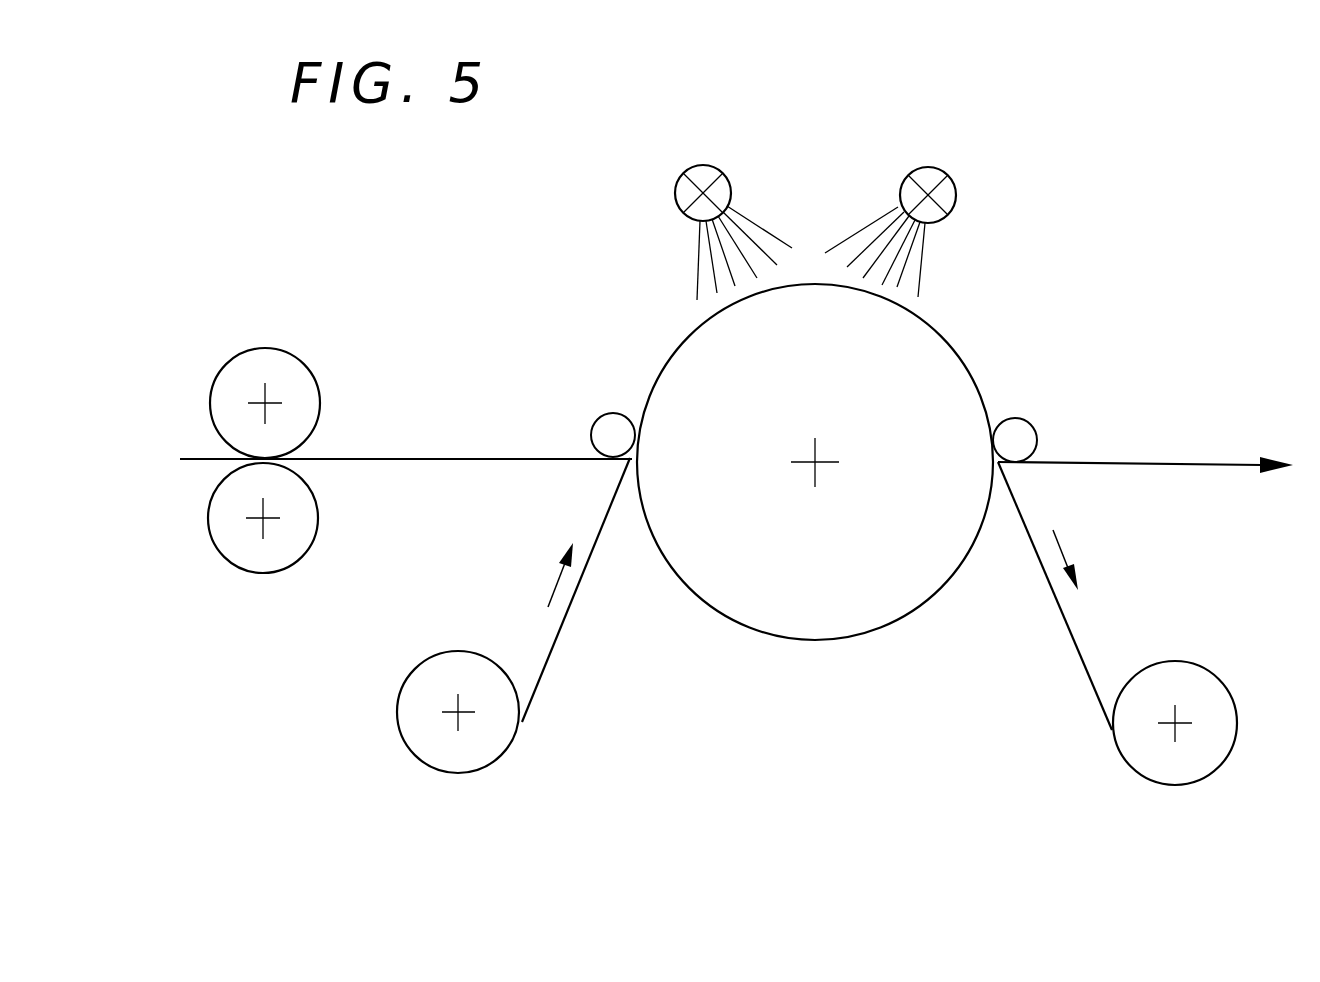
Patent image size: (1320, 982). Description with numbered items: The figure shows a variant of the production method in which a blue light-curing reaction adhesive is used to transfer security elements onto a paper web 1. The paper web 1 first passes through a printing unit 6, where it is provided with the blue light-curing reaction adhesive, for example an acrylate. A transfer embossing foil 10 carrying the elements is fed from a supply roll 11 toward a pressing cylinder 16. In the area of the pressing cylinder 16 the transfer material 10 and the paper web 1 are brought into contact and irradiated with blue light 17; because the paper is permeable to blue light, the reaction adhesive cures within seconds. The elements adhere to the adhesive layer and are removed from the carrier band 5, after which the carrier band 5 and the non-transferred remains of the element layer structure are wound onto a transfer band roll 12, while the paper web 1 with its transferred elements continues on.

The paper web 1 is at (1182, 462).
The carrier band 5 is at (1077, 653).
The printing unit 6 is at (318, 338).
The transfer embossing foil 10 is at (562, 628).
The supply roll 11 is at (437, 755).
The transfer band roll 12 is at (1185, 767).
The pressing cylinder 16 is at (810, 613).
The blue light 17 is at (717, 185).